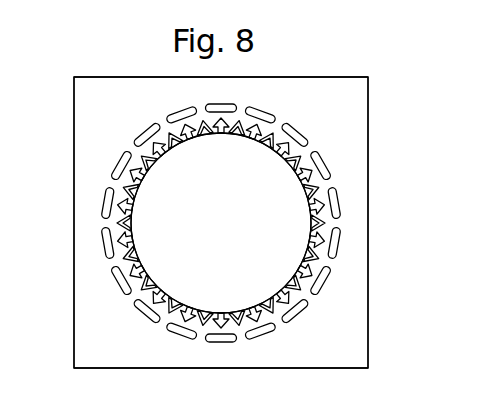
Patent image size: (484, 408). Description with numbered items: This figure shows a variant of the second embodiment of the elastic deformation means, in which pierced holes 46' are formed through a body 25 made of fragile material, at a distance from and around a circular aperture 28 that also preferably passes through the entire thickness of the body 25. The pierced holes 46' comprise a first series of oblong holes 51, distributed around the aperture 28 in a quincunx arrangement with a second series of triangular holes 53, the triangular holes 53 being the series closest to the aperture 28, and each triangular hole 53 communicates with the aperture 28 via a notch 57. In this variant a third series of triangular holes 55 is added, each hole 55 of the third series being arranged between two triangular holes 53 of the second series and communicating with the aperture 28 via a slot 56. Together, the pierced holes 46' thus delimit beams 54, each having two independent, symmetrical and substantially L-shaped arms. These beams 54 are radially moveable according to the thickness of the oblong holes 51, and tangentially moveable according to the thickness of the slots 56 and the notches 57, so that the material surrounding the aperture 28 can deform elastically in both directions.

The pierced holes 46' is at (208, 193).
The body 25 is at (100, 136).
The aperture 28 is at (160, 201).
The oblong holes 51 is at (135, 302).
The triangular holes 53 is at (262, 334).
The beams 54 is at (291, 315).
The triangular holes 55 is at (325, 176).
The slot 56 is at (256, 130).
The notch 57 is at (268, 304).